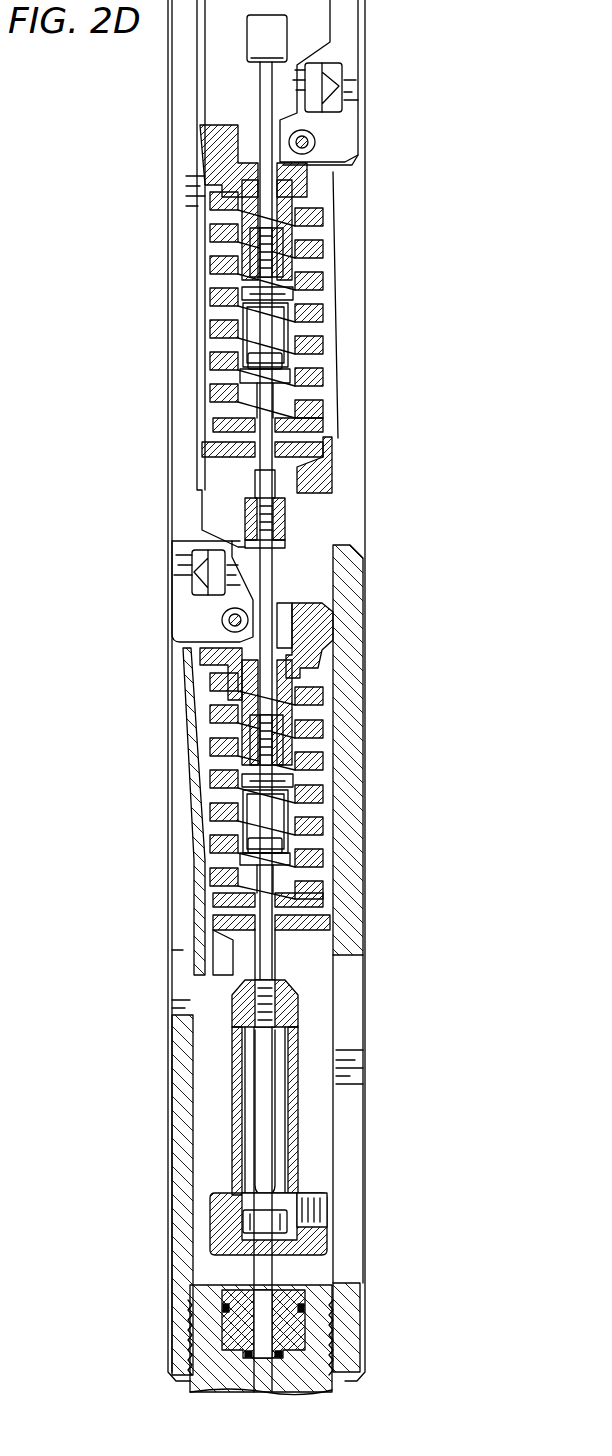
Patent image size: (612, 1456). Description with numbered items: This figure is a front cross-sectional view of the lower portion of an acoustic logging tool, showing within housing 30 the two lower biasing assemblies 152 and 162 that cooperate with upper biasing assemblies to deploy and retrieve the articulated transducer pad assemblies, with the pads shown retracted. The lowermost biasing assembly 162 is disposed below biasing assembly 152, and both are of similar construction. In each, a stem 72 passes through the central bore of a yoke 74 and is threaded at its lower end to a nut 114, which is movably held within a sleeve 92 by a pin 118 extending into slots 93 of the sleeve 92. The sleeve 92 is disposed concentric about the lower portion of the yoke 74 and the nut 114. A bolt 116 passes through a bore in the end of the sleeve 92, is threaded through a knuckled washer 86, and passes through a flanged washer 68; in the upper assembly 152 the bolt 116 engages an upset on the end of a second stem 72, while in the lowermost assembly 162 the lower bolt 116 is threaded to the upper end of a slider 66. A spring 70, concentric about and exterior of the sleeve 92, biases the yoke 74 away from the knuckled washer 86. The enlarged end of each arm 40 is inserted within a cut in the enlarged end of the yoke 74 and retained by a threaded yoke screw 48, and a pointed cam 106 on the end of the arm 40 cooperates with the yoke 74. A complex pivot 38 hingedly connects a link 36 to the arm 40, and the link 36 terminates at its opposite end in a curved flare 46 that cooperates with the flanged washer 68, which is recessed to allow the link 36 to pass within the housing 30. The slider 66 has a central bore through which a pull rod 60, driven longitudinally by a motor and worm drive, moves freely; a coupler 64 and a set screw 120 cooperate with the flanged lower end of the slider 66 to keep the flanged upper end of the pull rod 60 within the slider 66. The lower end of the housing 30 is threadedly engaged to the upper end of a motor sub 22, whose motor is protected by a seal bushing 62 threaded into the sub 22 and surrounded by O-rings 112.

The motor sub 22 is at (318, 1360).
The housing 30 is at (352, 702).
The link 36 is at (336, 325).
The pivot 38 is at (337, 90).
The arm 40 is at (350, 50).
The curved flare 46 is at (312, 480).
The yoke screw 48 is at (315, 140).
The pull rod 60 is at (270, 1270).
The seal bushing 62 is at (292, 1328).
The coupler 64 is at (213, 1217).
The slider 66 is at (300, 1085).
The flanged washer 68 is at (215, 455).
The spring 70 is at (318, 245).
The stem 72 is at (260, 100).
The yoke 74 is at (215, 147).
The knuckled washer 86 is at (280, 432).
The sleeve 92 is at (300, 377).
The slots 93 is at (243, 352).
The pointed cam 106 is at (290, 170).
The O-rings 112 is at (224, 1309).
The nut 114 is at (283, 283).
The bolt 116 is at (263, 400).
The pin 118 is at (247, 300).
The set screw 120 is at (330, 1200).
The lower biasing assembly 152 is at (222, 283).
The lowermost biasing assembly 162 is at (222, 797).